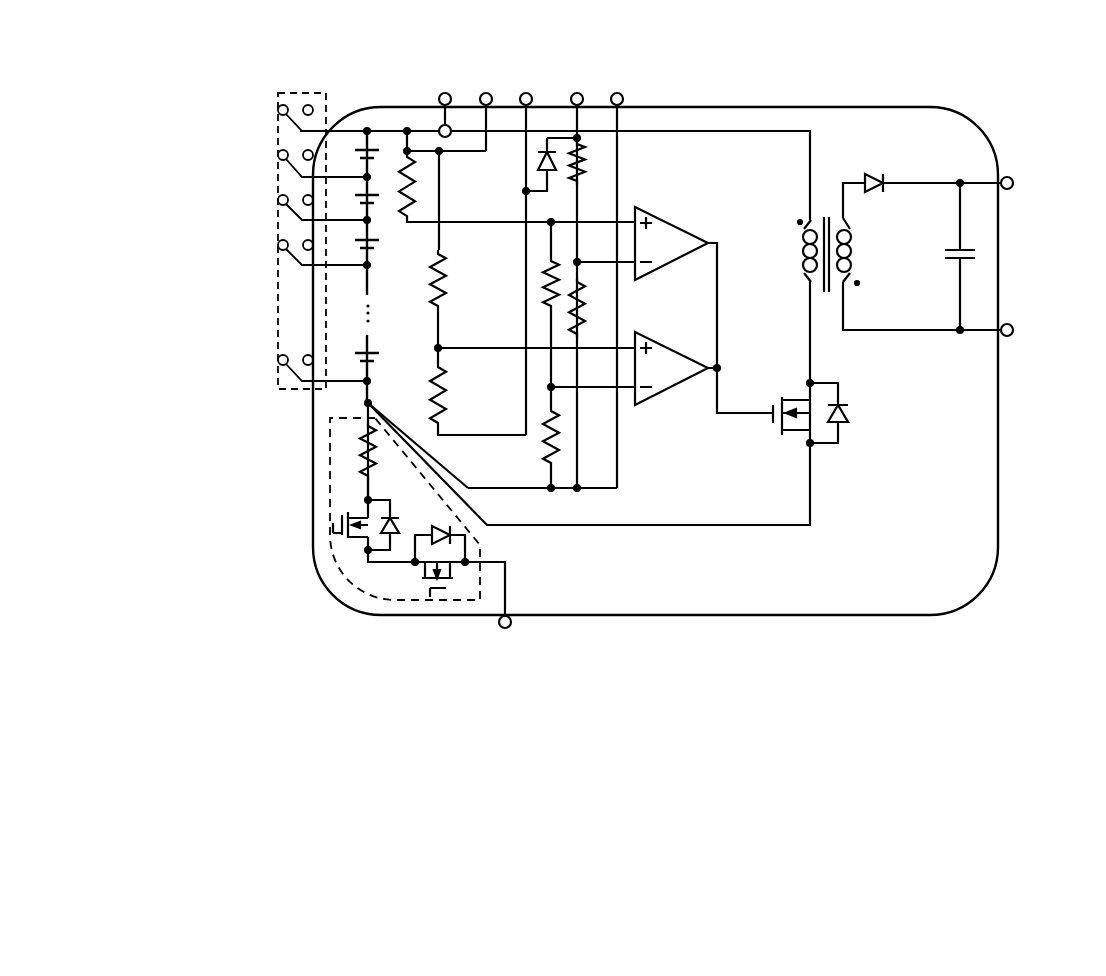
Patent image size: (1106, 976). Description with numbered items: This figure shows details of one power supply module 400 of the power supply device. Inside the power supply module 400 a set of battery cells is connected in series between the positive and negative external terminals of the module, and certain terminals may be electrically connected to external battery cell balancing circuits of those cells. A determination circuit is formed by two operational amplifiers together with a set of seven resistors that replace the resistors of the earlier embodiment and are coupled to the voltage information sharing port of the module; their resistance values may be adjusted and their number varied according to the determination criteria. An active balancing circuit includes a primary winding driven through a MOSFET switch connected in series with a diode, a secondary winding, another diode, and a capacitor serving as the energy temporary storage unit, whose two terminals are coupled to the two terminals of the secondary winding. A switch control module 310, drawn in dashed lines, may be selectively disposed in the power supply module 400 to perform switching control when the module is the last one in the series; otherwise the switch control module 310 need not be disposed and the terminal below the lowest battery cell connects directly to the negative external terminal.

The power supply module 400 is at (782, 107).
The switch control module 310 is at (330, 508).